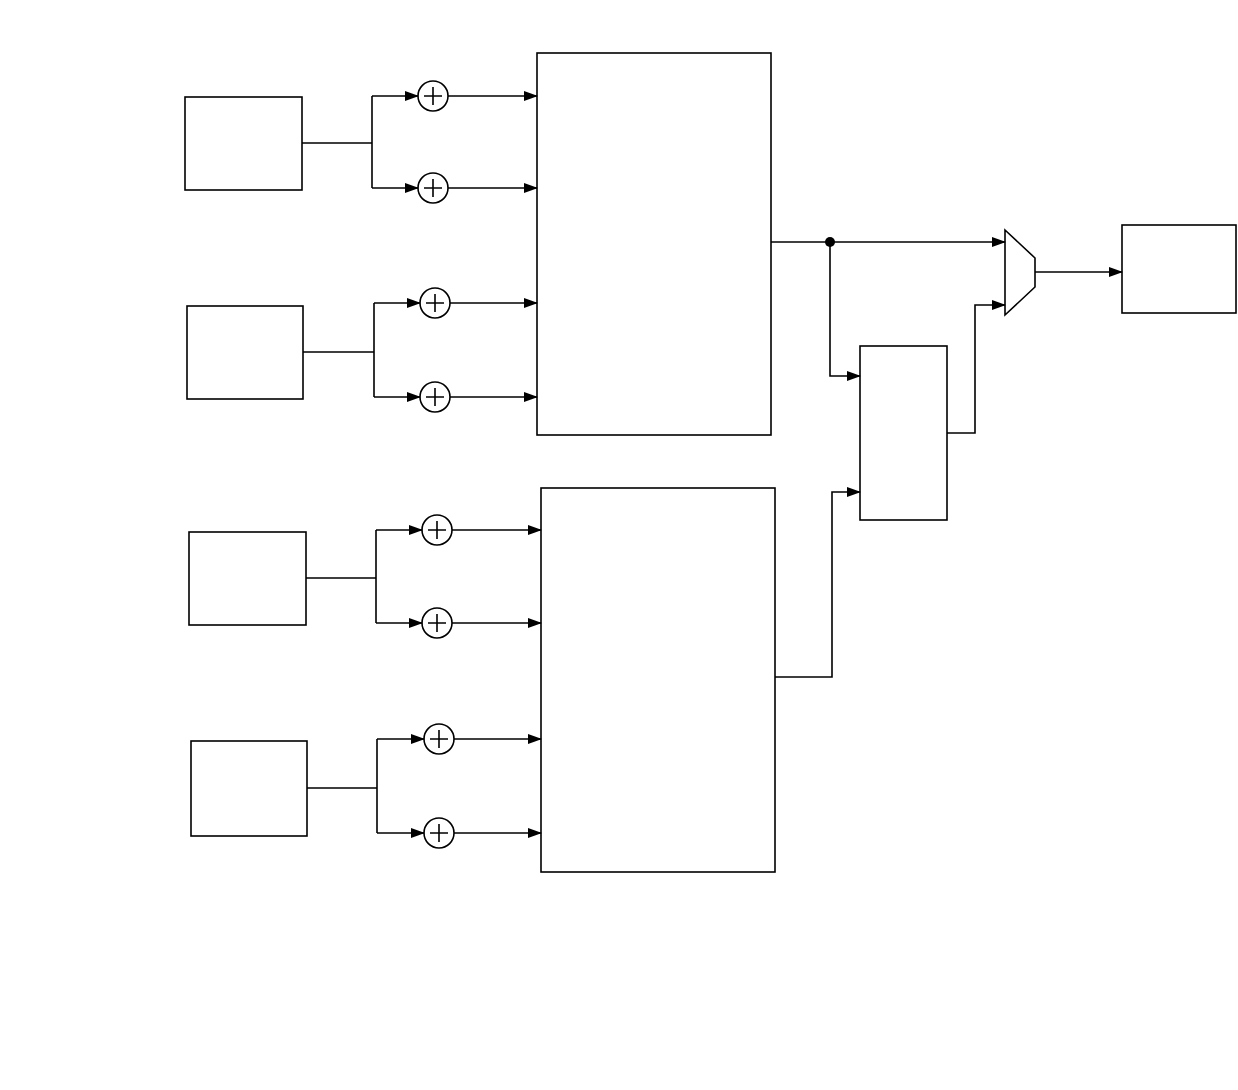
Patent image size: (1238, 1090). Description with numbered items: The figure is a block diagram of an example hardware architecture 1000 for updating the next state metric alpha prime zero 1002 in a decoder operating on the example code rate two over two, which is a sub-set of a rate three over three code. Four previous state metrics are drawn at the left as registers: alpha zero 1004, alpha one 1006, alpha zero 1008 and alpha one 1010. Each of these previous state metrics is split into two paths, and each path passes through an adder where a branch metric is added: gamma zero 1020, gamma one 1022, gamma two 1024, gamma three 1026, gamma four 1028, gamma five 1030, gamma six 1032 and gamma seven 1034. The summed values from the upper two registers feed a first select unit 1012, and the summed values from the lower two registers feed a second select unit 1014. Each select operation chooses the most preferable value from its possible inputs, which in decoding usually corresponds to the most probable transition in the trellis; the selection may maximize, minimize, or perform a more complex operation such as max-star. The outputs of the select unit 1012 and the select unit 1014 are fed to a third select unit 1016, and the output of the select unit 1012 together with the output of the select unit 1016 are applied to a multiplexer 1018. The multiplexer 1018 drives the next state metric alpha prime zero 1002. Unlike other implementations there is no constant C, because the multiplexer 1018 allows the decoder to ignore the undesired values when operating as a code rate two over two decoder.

The hardware architecture 1000 is at (836, 141).
The next state metric alpha prime zero 1002 is at (1178, 225).
The previous state metric alpha zero 1004 is at (243, 97).
The previous state metric alpha one 1006 is at (245, 306).
The previous state metric alpha zero 1008 is at (247, 532).
The previous state metric alpha one 1010 is at (248, 741).
The select unit 1012 is at (693, 304).
The select unit 1014 is at (696, 738).
The select unit 1016 is at (885, 471).
The multiplexer 1018 is at (1022, 247).
The branch metric gamma zero 1020 is at (433, 81).
The branch metric gamma one 1022 is at (433, 203).
The branch metric gamma two 1024 is at (435, 288).
The branch metric gamma three 1026 is at (435, 412).
The branch metric gamma four 1028 is at (437, 515).
The branch metric gamma five 1030 is at (437, 638).
The branch metric gamma six 1032 is at (439, 724).
The branch metric gamma seven 1034 is at (439, 848).